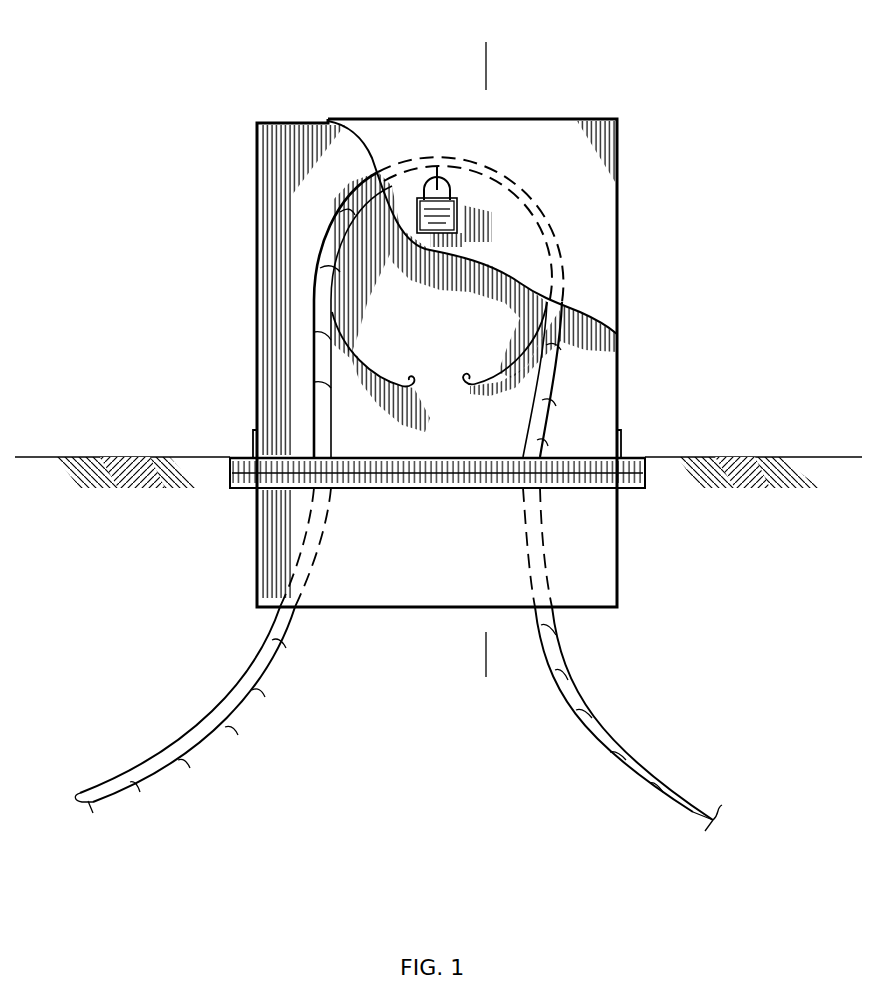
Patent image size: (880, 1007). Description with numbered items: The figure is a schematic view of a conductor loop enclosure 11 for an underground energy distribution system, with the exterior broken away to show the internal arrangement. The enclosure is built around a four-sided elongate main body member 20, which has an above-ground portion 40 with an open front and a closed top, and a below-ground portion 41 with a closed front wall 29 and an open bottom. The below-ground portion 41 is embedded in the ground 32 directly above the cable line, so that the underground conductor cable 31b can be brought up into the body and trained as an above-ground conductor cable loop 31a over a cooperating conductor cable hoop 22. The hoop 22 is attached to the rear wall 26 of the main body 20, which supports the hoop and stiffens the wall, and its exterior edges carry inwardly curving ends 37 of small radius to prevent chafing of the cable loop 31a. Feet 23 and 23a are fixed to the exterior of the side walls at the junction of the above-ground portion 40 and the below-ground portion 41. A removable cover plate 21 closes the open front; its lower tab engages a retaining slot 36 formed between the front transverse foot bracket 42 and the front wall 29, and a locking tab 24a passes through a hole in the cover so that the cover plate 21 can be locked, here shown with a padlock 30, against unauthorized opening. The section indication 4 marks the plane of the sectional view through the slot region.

The conductor loop enclosure 11 is at (630, 112).
The main body member 20 is at (288, 112).
The cover plate 21 is at (366, 141).
The conductor cable hoop 22 is at (513, 366).
The foot 23 is at (252, 440).
The foot 23a is at (621, 441).
The locking tab 24a is at (458, 166).
The rear wall 26 is at (467, 352).
The front wall 29 is at (450, 586).
The padlock 30 is at (458, 206).
The conductor cable loop 31a is at (318, 378).
The conductor cable 31b is at (210, 733).
The ground 32 is at (92, 457).
The retaining slot 36 is at (450, 457).
The inwardly curving ends 37 is at (410, 374).
The above-ground portion 40 is at (232, 260).
The below-ground portion 41 is at (232, 557).
The front transverse foot bracket 42 is at (627, 484).
The section line 4- 4 is at (497, 52).